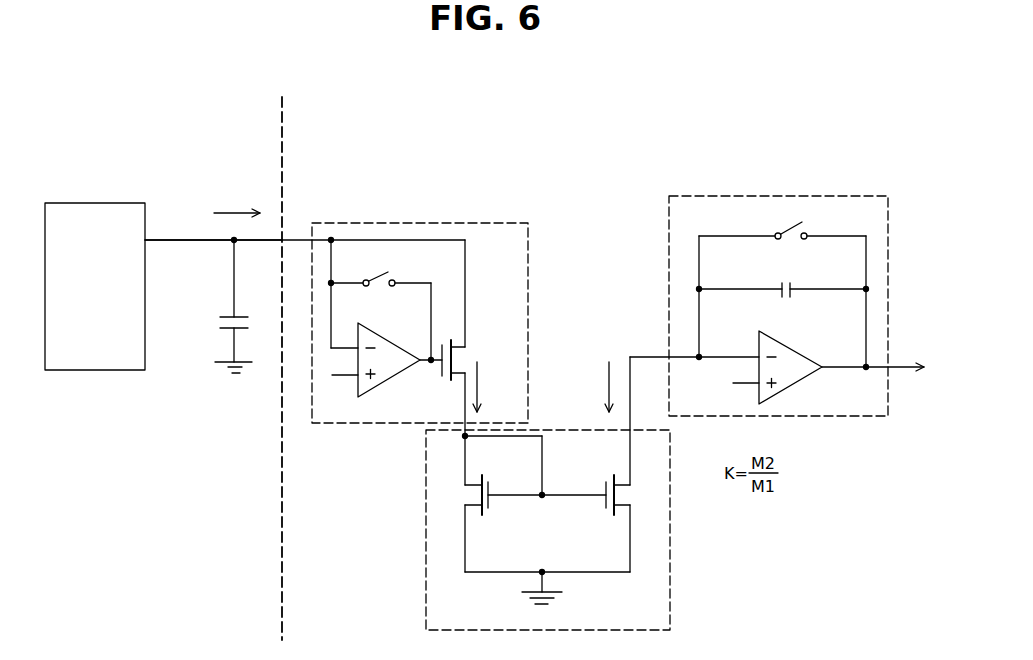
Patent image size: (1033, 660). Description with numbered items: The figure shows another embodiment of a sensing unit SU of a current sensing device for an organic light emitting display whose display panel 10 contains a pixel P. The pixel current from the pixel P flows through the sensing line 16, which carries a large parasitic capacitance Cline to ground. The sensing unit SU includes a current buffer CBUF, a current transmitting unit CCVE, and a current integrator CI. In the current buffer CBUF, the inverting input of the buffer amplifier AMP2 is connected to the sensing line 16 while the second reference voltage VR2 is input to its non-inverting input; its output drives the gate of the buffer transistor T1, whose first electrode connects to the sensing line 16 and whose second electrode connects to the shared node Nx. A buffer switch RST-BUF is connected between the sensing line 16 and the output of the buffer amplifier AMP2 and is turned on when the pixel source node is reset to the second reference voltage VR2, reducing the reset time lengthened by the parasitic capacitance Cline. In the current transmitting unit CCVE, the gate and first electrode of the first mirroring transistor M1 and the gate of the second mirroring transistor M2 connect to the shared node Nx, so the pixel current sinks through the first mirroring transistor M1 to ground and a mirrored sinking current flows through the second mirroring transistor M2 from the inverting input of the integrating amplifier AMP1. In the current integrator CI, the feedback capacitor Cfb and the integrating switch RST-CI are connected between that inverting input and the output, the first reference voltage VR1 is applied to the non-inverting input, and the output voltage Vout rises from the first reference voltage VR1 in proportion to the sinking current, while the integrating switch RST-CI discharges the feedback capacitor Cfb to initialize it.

The display panel 10 is at (168, 158).
The sensing line 16 is at (250, 243).
The pixel P is at (87, 298).
The parasitic capacitance Cline is at (207, 301).
The sensing unit SU is at (598, 158).
The current buffer CBUF is at (430, 222).
The buffer switch RST-BUF is at (381, 306).
The buffer amplifier AMP2 is at (389, 379).
The second reference voltage VR2 is at (338, 390).
The buffer transistor T1 is at (455, 338).
The current transmitting unit CCVE is at (670, 538).
The first mirroring transistor M1 is at (462, 504).
The second mirroring transistor M2 is at (630, 464).
The shared node Nx is at (547, 508).
The current integrator CI is at (778, 196).
The integrating switch RST-CI is at (782, 221).
The feedback capacitor Cfb is at (783, 279).
The integrating amplifier AMP1 is at (788, 348).
The first reference voltage VR1 is at (740, 399).
The output voltage Vout is at (873, 354).